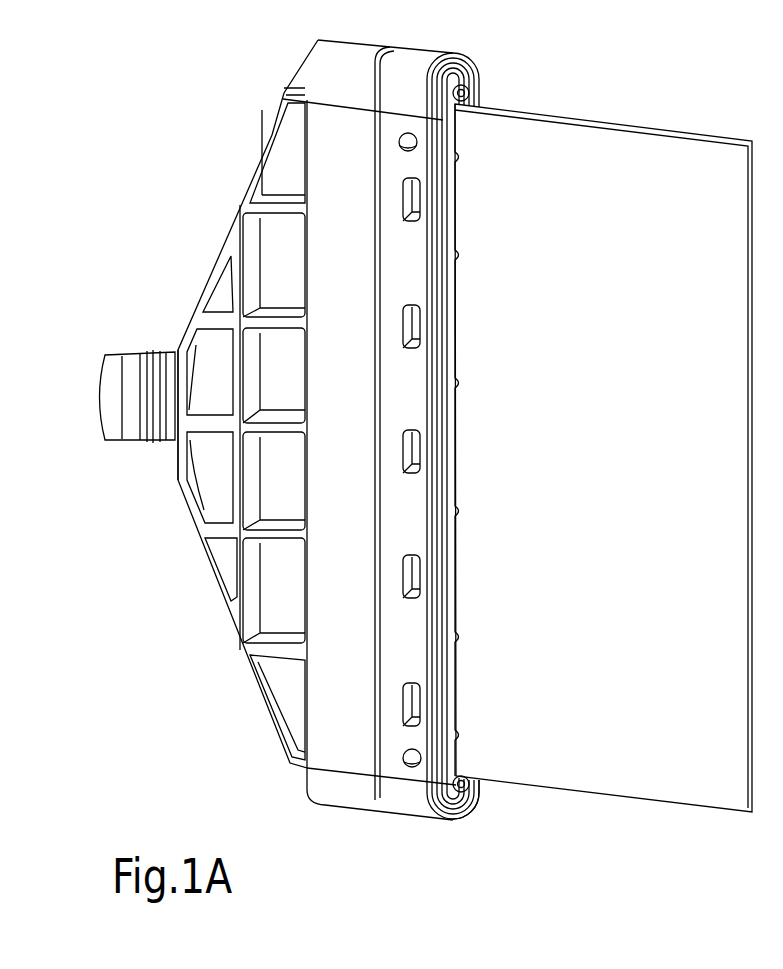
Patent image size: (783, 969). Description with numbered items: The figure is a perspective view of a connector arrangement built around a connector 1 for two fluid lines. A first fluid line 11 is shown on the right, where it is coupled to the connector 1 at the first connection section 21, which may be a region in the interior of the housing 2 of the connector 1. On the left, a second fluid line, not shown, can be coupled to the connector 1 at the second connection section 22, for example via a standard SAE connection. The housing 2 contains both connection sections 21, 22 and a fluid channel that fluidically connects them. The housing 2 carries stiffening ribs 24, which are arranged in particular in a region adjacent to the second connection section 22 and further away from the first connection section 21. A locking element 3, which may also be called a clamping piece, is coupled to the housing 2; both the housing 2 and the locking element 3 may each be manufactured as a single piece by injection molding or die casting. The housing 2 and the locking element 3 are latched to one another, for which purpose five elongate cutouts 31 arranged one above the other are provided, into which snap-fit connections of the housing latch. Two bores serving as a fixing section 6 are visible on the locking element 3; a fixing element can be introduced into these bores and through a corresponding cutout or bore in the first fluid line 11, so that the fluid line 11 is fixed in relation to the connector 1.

The connector 1 is at (152, 748).
The housing 2 is at (232, 233).
The locking element 3 is at (487, 77).
The fixing section 6 is at (398, 137).
The first fluid line 11 is at (621, 435).
The first connection section 21 is at (487, 820).
The second connection section 22 is at (97, 328).
The stiffening ribs 24 is at (272, 227).
The elongate cutouts 31 is at (410, 200).